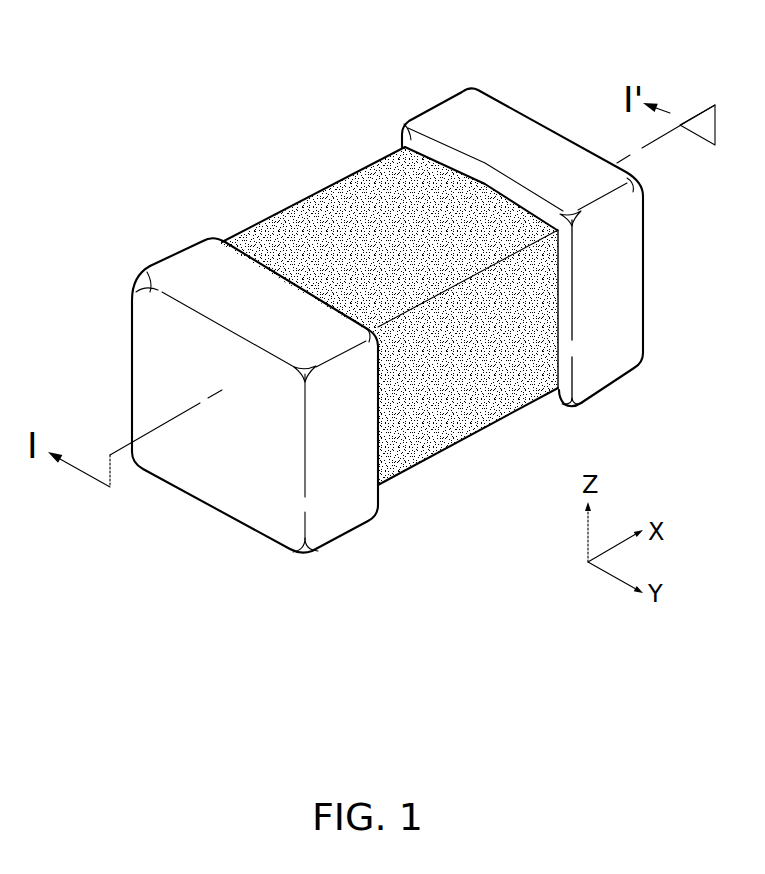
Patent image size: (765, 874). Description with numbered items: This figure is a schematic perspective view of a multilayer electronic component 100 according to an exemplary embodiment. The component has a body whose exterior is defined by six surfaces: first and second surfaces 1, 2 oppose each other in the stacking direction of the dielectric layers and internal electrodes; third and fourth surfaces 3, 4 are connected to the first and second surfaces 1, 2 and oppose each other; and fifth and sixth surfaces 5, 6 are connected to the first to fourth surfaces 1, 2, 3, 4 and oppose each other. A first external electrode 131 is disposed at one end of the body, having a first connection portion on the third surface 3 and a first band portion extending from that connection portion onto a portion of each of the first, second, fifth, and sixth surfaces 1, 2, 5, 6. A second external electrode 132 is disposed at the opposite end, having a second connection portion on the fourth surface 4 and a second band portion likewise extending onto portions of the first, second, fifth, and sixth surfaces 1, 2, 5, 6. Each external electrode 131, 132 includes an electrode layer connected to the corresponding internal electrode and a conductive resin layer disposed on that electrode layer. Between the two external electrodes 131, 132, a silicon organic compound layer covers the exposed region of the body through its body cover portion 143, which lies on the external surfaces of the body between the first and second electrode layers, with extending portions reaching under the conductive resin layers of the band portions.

The multilayer electronic component 100 is at (190, 97).
The first surface 1 is at (429, 408).
The second surface 2 is at (403, 200).
The third surface 3 is at (223, 456).
The fourth surface 4 is at (593, 262).
The fifth surface 5 is at (485, 378).
The sixth surface 6 is at (350, 223).
The first external electrode 131 is at (189, 263).
The second external electrode 132 is at (445, 115).
The body cover portion 143 is at (267, 251).